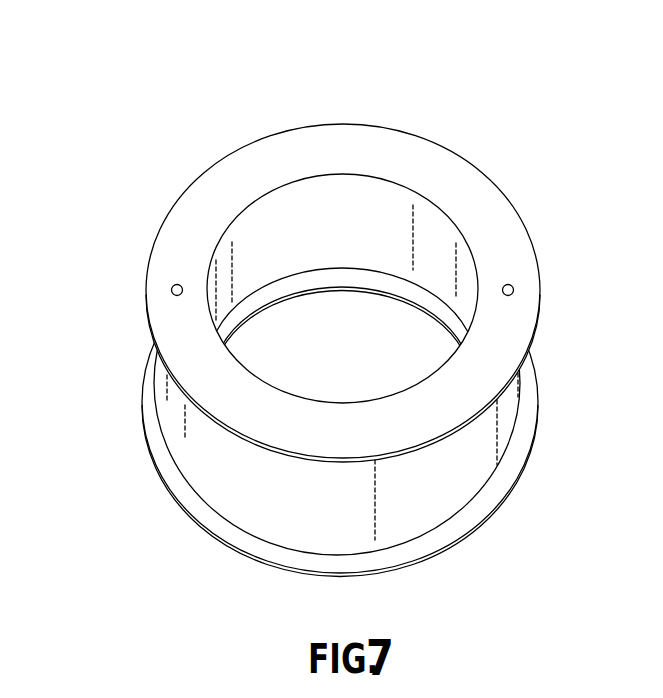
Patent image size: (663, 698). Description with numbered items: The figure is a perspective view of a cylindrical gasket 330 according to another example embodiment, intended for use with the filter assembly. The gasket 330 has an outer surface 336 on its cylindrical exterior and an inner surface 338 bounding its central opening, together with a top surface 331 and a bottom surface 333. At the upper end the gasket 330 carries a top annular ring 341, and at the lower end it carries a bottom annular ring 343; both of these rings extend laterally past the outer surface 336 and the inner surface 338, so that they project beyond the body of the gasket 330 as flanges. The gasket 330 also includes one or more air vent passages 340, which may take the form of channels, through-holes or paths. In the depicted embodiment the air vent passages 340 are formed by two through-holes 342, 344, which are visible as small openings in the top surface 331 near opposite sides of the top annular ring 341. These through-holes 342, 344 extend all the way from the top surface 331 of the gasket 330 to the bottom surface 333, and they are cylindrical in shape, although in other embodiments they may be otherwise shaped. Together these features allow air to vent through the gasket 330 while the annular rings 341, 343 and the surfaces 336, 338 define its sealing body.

The cylindrical gasket 330 is at (327, 301).
The top surface 331 is at (374, 268).
The bottom surface 333 is at (353, 404).
The outer surface 336 is at (398, 383).
The inner surface 338 is at (364, 281).
The air vent passages 340 is at (326, 276).
The top annular ring 341 is at (374, 315).
The through-hole 342 is at (120, 314).
The bottom annular ring 343 is at (355, 491).
The through-hole 344 is at (571, 278).